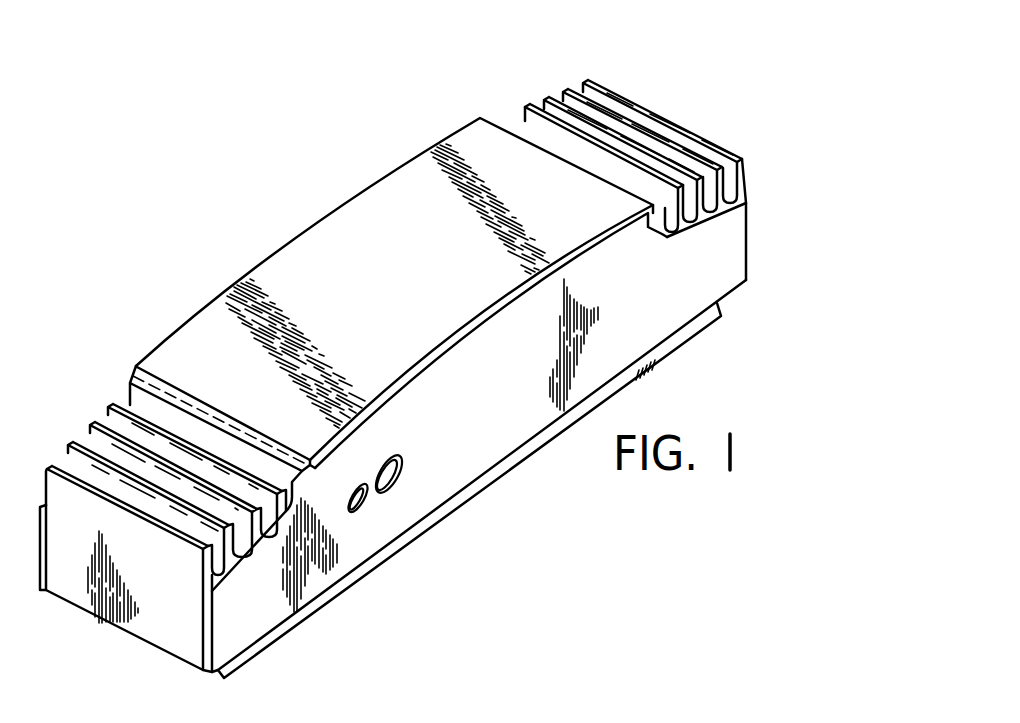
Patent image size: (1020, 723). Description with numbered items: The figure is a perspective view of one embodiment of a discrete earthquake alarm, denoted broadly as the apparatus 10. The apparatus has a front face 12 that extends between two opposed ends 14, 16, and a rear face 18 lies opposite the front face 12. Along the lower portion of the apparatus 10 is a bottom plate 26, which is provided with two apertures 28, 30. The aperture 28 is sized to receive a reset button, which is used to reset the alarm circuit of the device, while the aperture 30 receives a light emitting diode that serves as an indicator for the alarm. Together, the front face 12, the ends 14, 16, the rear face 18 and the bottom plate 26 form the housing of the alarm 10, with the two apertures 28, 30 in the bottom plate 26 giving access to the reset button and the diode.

The discrete earthquake alarm 10 is at (662, 92).
The front face 12 is at (386, 279).
The end 14 is at (88, 593).
The end 16 is at (735, 228).
The rear face 18 is at (503, 465).
The bottom plate 26 is at (260, 610).
The aperture 28 is at (394, 487).
The aperture 30 is at (360, 509).